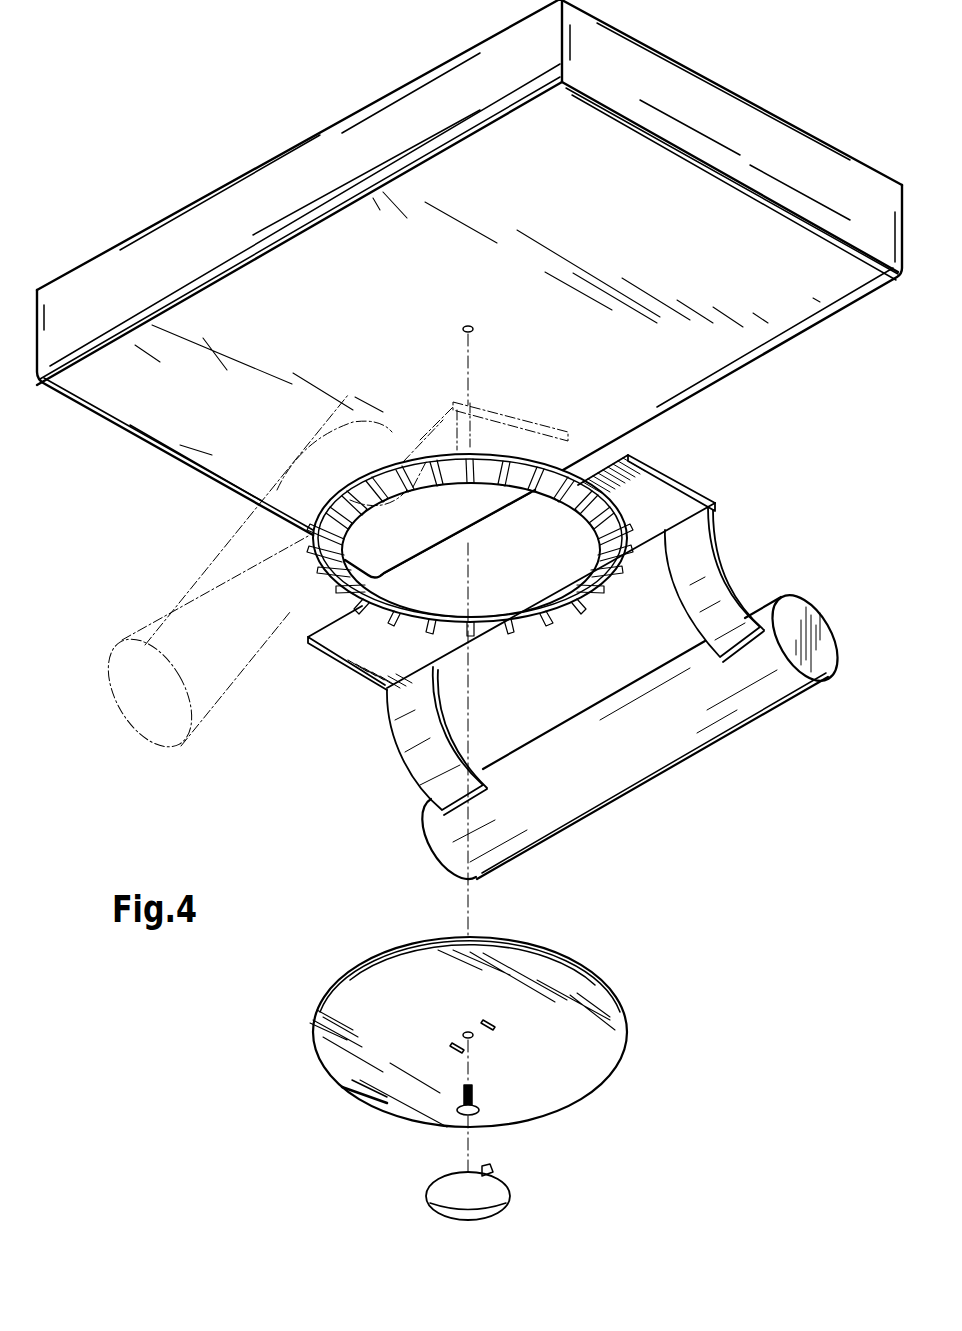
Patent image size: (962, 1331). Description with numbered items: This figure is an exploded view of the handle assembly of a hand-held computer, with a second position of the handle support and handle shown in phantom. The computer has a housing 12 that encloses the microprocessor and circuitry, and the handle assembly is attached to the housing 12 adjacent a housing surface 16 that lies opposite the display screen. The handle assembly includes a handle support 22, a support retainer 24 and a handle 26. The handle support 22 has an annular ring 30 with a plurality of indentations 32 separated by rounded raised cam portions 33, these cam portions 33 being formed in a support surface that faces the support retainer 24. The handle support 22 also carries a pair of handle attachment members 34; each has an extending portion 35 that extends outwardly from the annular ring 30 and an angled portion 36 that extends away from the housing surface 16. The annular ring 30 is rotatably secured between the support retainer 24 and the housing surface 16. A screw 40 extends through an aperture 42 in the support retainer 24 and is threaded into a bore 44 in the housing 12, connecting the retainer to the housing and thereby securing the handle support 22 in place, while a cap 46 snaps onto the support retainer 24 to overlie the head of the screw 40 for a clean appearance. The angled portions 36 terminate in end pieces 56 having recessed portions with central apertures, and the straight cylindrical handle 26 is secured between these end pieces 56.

The housing 12 is at (162, 150).
The housing surface 16 is at (768, 300).
The handle support 22 is at (660, 449).
The support retainer 24 is at (558, 1043).
The handle 26 is at (640, 738).
The annular ring 30 is at (312, 540).
The indentations 32 is at (333, 568).
The cam portions 33 is at (312, 555).
The handle attachment members 34 is at (748, 497).
The extending portion 35 is at (660, 503).
The angled portion 36 is at (722, 563).
The screw 40 is at (467, 1116).
The aperture 42 is at (465, 1035).
The bore 44 is at (478, 323).
The cap 46 is at (475, 1204).
The end pieces 56 is at (734, 678).